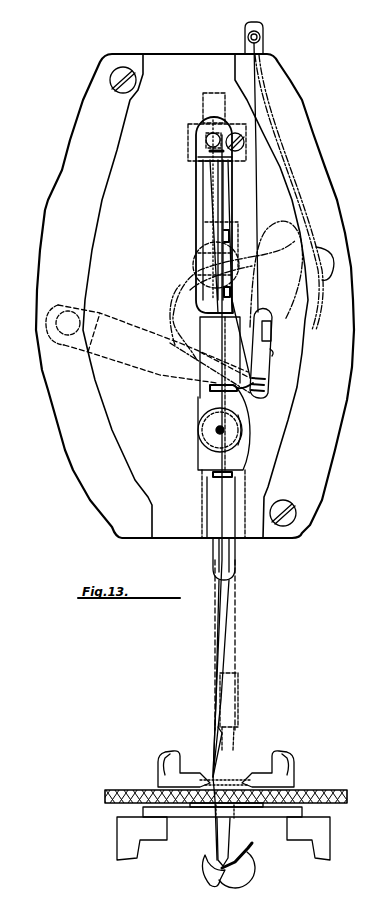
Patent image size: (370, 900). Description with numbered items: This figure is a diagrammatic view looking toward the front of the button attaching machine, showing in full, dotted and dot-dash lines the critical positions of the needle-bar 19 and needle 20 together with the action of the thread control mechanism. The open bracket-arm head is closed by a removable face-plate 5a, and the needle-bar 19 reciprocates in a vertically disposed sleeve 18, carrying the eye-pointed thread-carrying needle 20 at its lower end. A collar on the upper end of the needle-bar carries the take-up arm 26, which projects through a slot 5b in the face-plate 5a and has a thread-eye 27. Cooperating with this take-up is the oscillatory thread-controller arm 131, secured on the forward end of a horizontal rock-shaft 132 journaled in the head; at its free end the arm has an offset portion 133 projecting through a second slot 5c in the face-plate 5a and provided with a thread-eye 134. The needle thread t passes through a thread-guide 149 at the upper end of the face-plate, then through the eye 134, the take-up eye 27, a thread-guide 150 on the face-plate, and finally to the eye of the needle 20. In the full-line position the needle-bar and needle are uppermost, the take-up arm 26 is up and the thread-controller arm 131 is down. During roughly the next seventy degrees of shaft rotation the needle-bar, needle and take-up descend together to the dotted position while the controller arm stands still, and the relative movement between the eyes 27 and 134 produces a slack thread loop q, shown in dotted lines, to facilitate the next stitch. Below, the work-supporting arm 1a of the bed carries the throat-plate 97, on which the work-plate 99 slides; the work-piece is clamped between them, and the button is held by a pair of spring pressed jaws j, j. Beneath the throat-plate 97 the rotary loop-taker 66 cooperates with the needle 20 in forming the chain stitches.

The thread-guide 149 is at (263, 34).
The needle-bar 19 is at (213, 93).
The take-up arm 26 is at (210, 133).
The thread-eye 27 is at (200, 140).
The slot 5b is at (196, 182).
The face-plate 5a is at (90, 490).
The slot 5c is at (273, 352).
The rock-shaft 132 is at (82, 312).
The thread-controller arm 131 is at (133, 327).
The offset portion 133 is at (271, 331).
The thread-eye 134 is at (265, 390).
The thread-guide 150 is at (208, 413).
The sleeve 18 is at (202, 493).
The needle 20 is at (233, 597).
The throat-plate 97 is at (302, 813).
The work-plate 99 is at (210, 807).
The work-supporting arm 1a is at (329, 836).
The loop-taker 66 is at (256, 846).
The thread t is at (259, 181).
The jaws j is at (158, 776).
The thread loop q is at (325, 271).